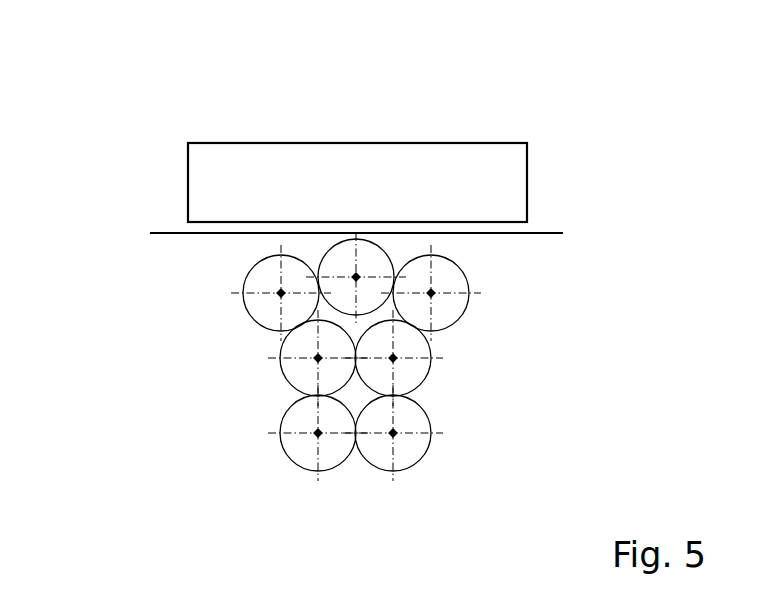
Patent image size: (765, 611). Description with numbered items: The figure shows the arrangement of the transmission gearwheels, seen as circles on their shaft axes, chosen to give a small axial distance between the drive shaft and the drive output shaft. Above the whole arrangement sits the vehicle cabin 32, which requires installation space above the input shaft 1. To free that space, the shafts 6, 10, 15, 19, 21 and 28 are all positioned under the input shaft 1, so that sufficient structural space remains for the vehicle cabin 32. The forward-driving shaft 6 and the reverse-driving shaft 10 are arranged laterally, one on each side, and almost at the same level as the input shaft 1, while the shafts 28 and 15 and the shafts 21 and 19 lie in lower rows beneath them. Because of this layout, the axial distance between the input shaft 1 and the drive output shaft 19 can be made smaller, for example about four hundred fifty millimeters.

The vehicle cabin 32 is at (427, 142).
The input shaft 1 is at (356, 277).
The forward-driving shaft 6 is at (281, 293).
The reverse-driving shaft 10 is at (431, 293).
The shaft 28 is at (318, 358).
The shaft 15 is at (393, 358).
The shaft 21 is at (318, 433).
The drive output shaft 19 is at (393, 433).